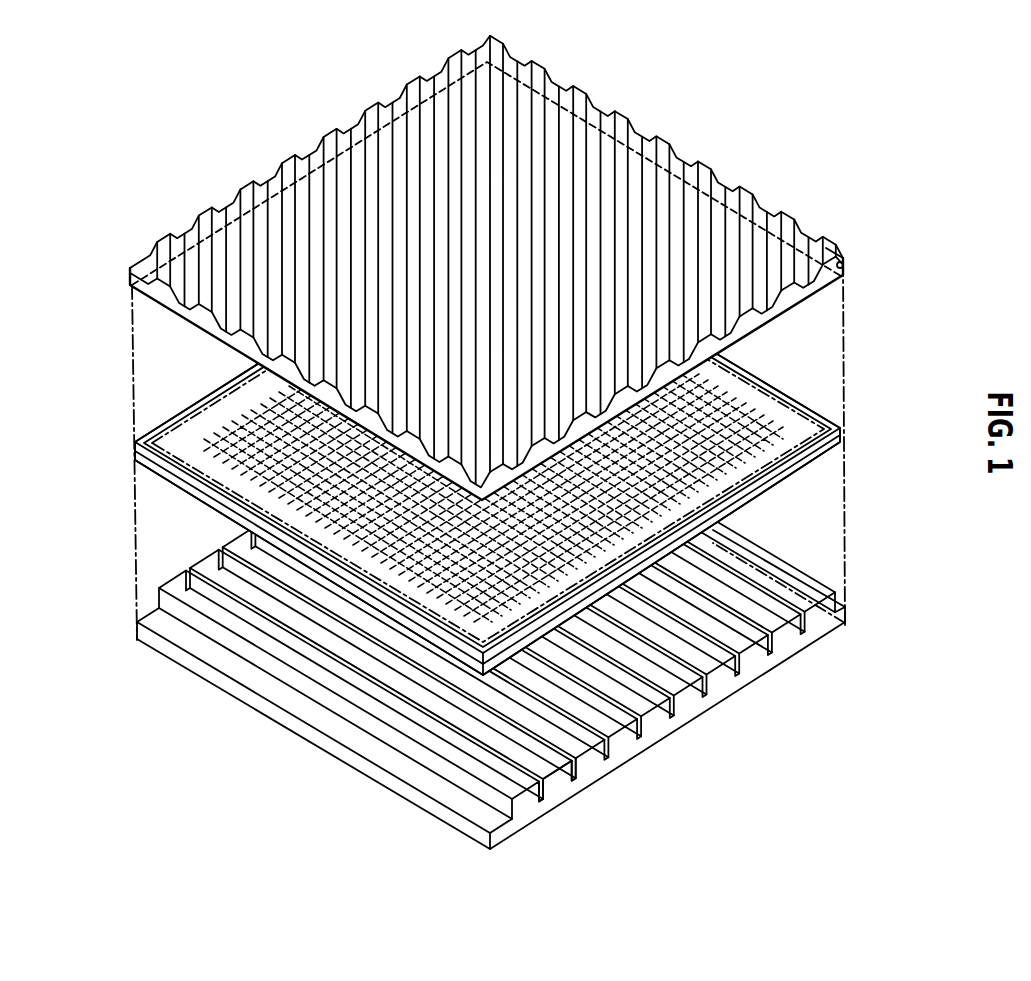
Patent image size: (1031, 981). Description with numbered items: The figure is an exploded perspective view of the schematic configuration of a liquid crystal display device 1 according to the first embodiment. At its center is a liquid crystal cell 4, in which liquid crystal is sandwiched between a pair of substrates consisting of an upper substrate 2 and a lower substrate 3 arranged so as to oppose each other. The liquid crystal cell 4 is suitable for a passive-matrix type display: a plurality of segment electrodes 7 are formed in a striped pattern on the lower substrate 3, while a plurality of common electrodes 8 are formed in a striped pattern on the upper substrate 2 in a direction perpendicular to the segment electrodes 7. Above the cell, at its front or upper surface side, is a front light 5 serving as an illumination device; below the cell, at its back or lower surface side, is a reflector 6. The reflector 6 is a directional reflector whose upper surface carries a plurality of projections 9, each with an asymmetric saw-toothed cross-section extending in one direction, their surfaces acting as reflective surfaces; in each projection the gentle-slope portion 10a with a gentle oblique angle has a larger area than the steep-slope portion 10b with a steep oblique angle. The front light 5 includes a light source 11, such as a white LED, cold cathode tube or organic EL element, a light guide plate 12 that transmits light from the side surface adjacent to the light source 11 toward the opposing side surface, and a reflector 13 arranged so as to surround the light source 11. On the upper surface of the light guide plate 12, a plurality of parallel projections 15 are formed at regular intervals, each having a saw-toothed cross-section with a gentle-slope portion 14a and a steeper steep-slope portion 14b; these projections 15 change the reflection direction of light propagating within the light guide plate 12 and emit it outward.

The liquid crystal display device 1 is at (198, 180).
The upper substrate 2 is at (841, 397).
The lower substrate 3 is at (840, 462).
The liquid crystal cell 4 is at (546, 446).
The front light 5 is at (525, 266).
The reflector 6 is at (491, 622).
The segment electrodes 7 is at (757, 410).
The common electrodes 8 is at (212, 432).
The projections 9 is at (563, 793).
The gentle-slope portion 10a is at (547, 767).
The steep-slope portion 10b is at (543, 789).
The light source 11 is at (843, 267).
The light guide plate 12 is at (307, 168).
The reflector 13 is at (838, 260).
The gentle-slope portion 14a is at (617, 170).
The steep-slope portion 14b is at (640, 168).
The projections 15 is at (490, 121).